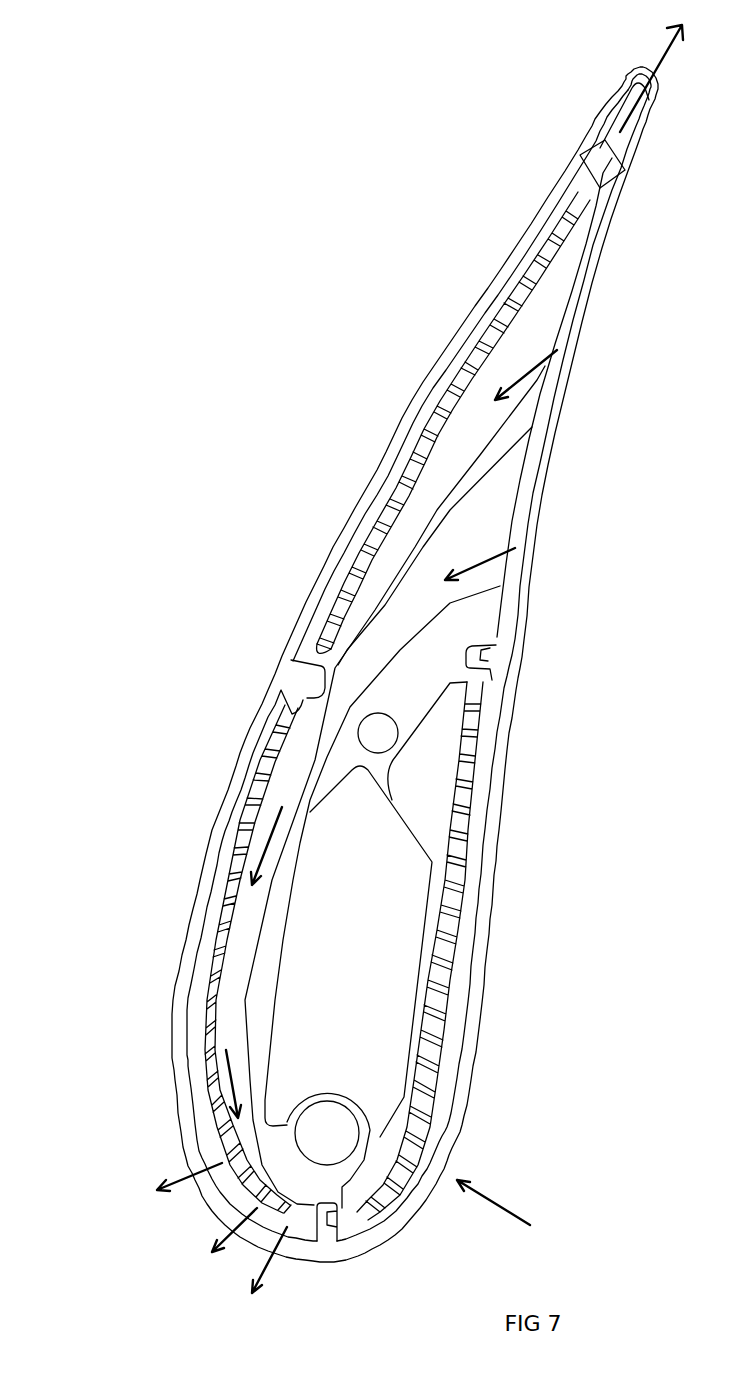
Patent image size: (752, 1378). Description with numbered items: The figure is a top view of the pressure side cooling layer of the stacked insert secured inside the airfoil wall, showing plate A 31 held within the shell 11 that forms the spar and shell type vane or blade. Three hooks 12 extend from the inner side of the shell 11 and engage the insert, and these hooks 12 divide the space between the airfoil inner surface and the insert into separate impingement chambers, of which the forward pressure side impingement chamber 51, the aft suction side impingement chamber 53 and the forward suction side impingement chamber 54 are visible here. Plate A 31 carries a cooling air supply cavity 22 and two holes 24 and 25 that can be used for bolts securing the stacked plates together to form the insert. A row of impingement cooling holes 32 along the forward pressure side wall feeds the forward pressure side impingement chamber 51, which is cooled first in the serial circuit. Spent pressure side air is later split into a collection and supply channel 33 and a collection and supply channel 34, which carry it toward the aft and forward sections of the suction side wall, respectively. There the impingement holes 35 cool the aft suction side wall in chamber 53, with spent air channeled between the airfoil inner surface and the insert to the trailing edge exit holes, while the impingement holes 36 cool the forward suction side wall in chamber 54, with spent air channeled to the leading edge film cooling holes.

The shell 11 is at (175, 1030).
The hooks 12 is at (290, 678).
The cooling air supply cavity 22 is at (343, 1000).
The hole 24 is at (325, 1135).
The hole 25 is at (378, 733).
The plate A 31 is at (243, 932).
The impingement cooling holes 32 is at (450, 1020).
The collection and supply channel 33 is at (527, 340).
The collection and supply channel 34 is at (475, 530).
The impingement holes 35 is at (435, 427).
The impingement holes 36 is at (238, 855).
The forward pressure side impingement chamber 51 is at (450, 1070).
The aft suction side impingement chamber 53 is at (398, 468).
The forward suction side impingement chamber 54 is at (205, 885).